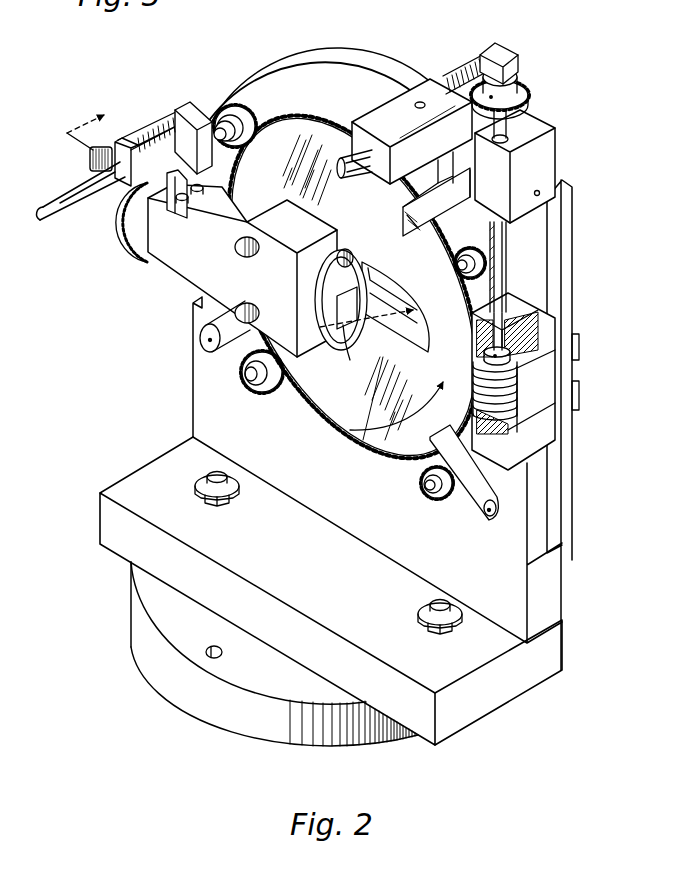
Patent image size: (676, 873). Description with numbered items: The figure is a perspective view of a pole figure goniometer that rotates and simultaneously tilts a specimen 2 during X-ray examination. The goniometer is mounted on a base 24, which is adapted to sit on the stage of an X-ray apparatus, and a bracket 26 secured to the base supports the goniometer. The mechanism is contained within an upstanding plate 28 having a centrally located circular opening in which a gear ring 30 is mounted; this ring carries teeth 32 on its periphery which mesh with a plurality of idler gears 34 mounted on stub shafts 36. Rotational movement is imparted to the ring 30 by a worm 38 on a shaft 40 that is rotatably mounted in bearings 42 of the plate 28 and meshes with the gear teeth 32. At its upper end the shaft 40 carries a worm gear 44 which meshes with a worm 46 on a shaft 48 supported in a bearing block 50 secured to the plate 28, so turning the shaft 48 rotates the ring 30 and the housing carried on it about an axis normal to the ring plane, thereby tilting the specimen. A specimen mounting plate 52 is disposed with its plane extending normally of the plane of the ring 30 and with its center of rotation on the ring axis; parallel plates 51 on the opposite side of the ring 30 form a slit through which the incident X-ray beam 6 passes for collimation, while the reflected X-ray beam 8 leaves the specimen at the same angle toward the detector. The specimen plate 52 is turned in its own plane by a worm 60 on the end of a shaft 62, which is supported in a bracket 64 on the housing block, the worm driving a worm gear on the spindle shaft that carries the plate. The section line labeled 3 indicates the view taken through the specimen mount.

The specimen 2 is at (348, 351).
The section line 3 is at (249, 214).
The X-ray beam 6 is at (380, 267).
The reflected X-ray beam 8 is at (297, 345).
The base 24 is at (207, 715).
The bracket 26 is at (523, 682).
The upstanding plate 28 is at (547, 527).
The gear ring 30 is at (333, 138).
The teeth 32 is at (305, 114).
The idler gears 34 is at (233, 105).
The stub shafts 36 is at (202, 187).
The worm 38 is at (518, 365).
The shaft 40 is at (507, 267).
The bearings 42 is at (548, 158).
The worm gear 44 is at (530, 100).
The worm 46 is at (462, 72).
The shaft 48 is at (350, 177).
The bearing block 50 is at (430, 78).
The parallel plates 51 is at (579, 395).
The specimen mounting plate 52 is at (327, 285).
The worm 60 is at (143, 146).
The shaft 62 is at (118, 190).
The bracket 64 is at (178, 110).